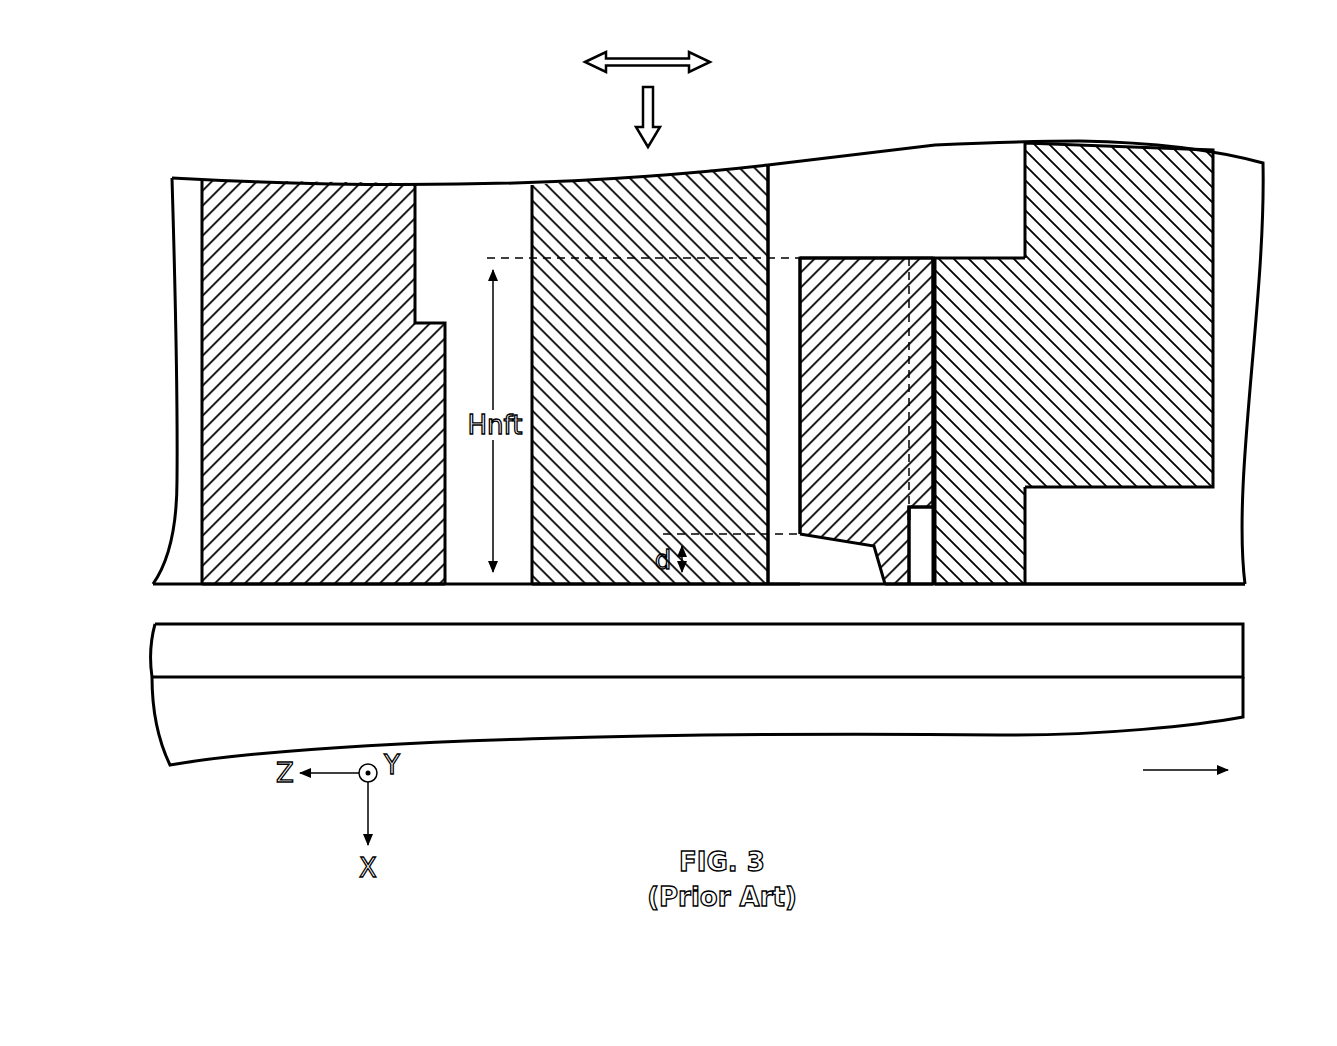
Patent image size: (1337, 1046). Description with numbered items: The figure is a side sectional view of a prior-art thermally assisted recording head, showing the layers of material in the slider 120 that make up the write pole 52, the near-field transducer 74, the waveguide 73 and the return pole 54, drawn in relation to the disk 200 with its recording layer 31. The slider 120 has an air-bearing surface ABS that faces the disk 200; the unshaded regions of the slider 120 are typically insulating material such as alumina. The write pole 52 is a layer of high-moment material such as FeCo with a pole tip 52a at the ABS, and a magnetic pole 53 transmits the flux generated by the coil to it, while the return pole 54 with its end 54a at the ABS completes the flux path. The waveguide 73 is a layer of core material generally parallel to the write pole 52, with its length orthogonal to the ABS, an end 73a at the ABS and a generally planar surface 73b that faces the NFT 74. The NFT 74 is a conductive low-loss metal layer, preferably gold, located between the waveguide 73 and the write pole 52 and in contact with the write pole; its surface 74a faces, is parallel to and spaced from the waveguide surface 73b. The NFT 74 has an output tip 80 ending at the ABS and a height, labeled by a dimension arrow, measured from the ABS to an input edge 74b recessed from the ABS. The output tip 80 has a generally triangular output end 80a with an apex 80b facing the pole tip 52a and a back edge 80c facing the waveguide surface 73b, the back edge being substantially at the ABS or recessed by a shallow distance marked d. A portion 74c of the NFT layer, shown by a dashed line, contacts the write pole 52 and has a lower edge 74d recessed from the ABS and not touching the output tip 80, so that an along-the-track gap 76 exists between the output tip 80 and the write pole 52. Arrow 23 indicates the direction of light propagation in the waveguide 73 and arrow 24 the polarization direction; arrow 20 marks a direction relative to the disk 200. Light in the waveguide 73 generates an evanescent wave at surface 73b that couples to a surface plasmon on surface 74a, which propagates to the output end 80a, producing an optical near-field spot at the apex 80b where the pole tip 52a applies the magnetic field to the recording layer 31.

The disk rotation direction 20 is at (1173, 771).
The arrow (direction of light propagation) 23 is at (640, 121).
The arrow (direction of light polarization) 24 is at (678, 55).
The recording layer 31 is at (1227, 657).
The write pole 52 is at (1010, 547).
The pole tip 52a is at (1012, 588).
The magnetic pole 53 is at (1197, 217).
The return pole 54 is at (275, 193).
The return pole end at ABS 54a is at (273, 585).
The waveguide 73 is at (565, 192).
The waveguide end 73a is at (568, 585).
The waveguide surface 73b is at (770, 222).
The near-field transducer (NFT) 74 is at (848, 272).
The NFT surface 74a is at (800, 363).
The input edge 74b is at (870, 258).
The NFT portion 74c is at (935, 392).
The lower edge 74d is at (920, 513).
The gap 76 is at (925, 537).
The output tip 80 is at (878, 558).
The output end 80a is at (895, 587).
The apex 80b is at (910, 587).
The back edge 80c is at (790, 585).
The slider 120 is at (932, 166).
The disk 200 is at (1228, 696).
The air-bearing surface ABS is at (1233, 588).